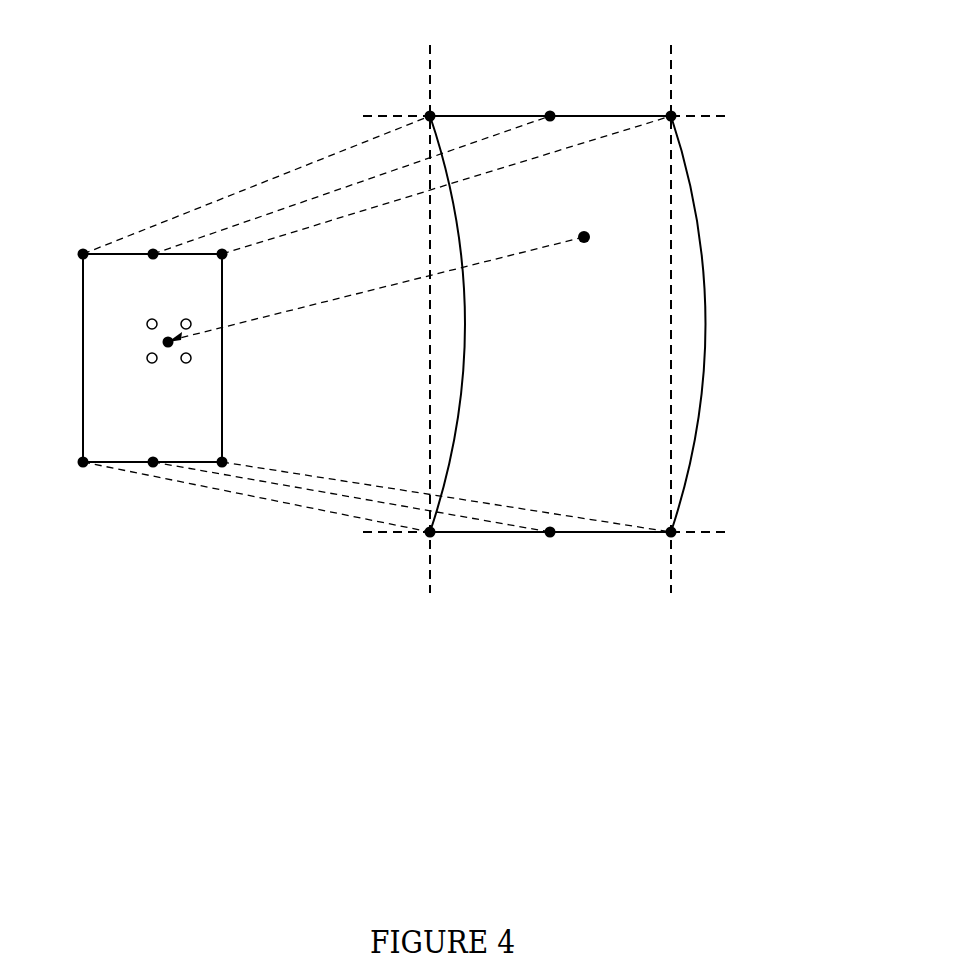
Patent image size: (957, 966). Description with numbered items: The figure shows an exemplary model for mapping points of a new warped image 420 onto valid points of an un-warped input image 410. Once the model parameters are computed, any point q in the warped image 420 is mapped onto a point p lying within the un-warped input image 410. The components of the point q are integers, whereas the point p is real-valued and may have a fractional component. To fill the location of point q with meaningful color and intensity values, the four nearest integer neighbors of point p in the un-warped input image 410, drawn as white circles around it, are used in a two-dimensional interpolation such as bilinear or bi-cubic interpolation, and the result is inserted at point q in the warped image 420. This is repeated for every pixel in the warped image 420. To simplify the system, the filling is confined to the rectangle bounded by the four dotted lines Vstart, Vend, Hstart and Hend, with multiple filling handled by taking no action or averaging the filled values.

The un-warped input image 410 is at (124, 358).
The warped image 420 is at (478, 533).
The point p is at (184, 376).
The point q is at (598, 261).
The Hstart dotted line Hstart is at (435, 300).
The Hend dotted line Hend is at (679, 297).
The Vstart dotted line Vstart is at (579, 114).
The Vend dotted line Vend is at (576, 530).